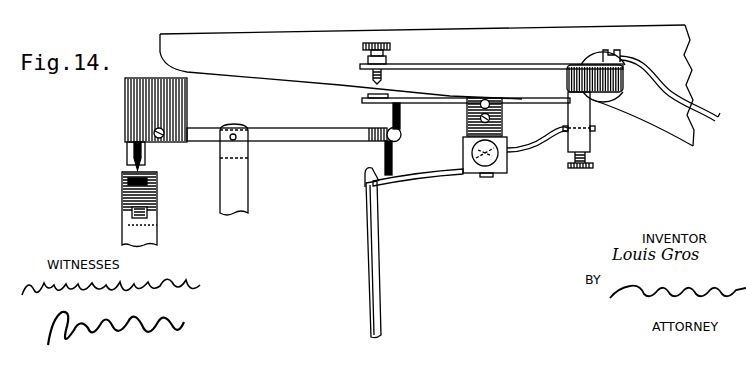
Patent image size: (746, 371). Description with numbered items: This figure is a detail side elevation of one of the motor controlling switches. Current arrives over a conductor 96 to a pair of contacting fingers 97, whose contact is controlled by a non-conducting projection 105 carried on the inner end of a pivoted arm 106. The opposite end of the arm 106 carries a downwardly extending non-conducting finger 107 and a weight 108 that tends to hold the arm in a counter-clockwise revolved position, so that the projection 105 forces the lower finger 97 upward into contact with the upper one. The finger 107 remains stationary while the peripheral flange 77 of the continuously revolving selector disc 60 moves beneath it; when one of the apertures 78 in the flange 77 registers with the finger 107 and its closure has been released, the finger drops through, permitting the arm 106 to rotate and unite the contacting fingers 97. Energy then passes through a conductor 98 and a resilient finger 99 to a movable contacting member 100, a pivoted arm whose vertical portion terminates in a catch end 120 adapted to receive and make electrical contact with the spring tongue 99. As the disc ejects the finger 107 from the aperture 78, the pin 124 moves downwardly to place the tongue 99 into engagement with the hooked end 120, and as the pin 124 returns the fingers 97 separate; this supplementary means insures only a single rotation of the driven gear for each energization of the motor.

The selector disc 60 is at (127, 225).
The rearwardly extending peripheral flange 77 is at (151, 209).
The apertures 78 is at (133, 212).
The conductor 96 is at (707, 105).
The contacting fingers 97 is at (465, 96).
The conductor 98 is at (537, 144).
The resilient finger 99 is at (438, 177).
The movable contacting member 100 is at (374, 272).
The non-conducting projection 105 is at (401, 109).
The pivoted arm 106 is at (297, 135).
The non-conducting finger 107 is at (146, 152).
The weight 108 is at (173, 111).
The catch end 120 is at (368, 184).
The pin 124 is at (393, 153).